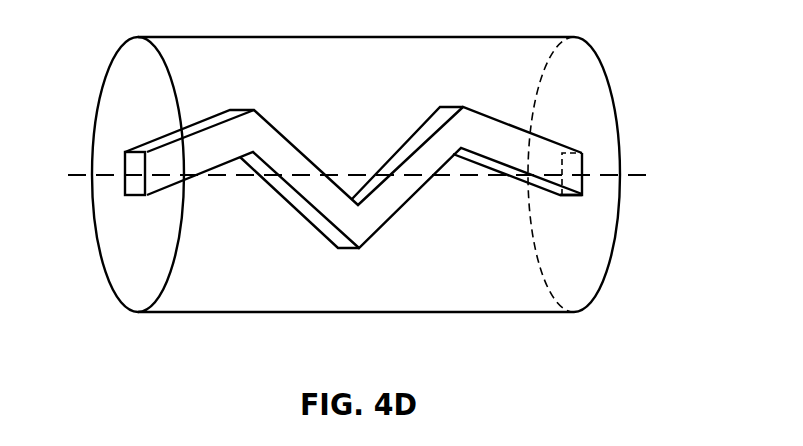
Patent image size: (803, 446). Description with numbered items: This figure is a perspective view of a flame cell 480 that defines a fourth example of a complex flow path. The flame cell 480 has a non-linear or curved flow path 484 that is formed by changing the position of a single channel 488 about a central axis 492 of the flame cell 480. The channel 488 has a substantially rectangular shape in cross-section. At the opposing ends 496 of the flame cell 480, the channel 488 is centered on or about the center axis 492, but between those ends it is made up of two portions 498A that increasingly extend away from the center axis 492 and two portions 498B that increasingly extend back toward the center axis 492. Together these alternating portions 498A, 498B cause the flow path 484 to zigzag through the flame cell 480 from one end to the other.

The flame cell 480 is at (372, 196).
The flow path 484 is at (353, 168).
The channel 488 is at (127, 154).
The central axis 492 is at (636, 174).
The opposing ends 496 is at (122, 70).
The portions extending away from the center axis 498A is at (208, 123).
The portions extending toward the center axis 498B is at (313, 216).